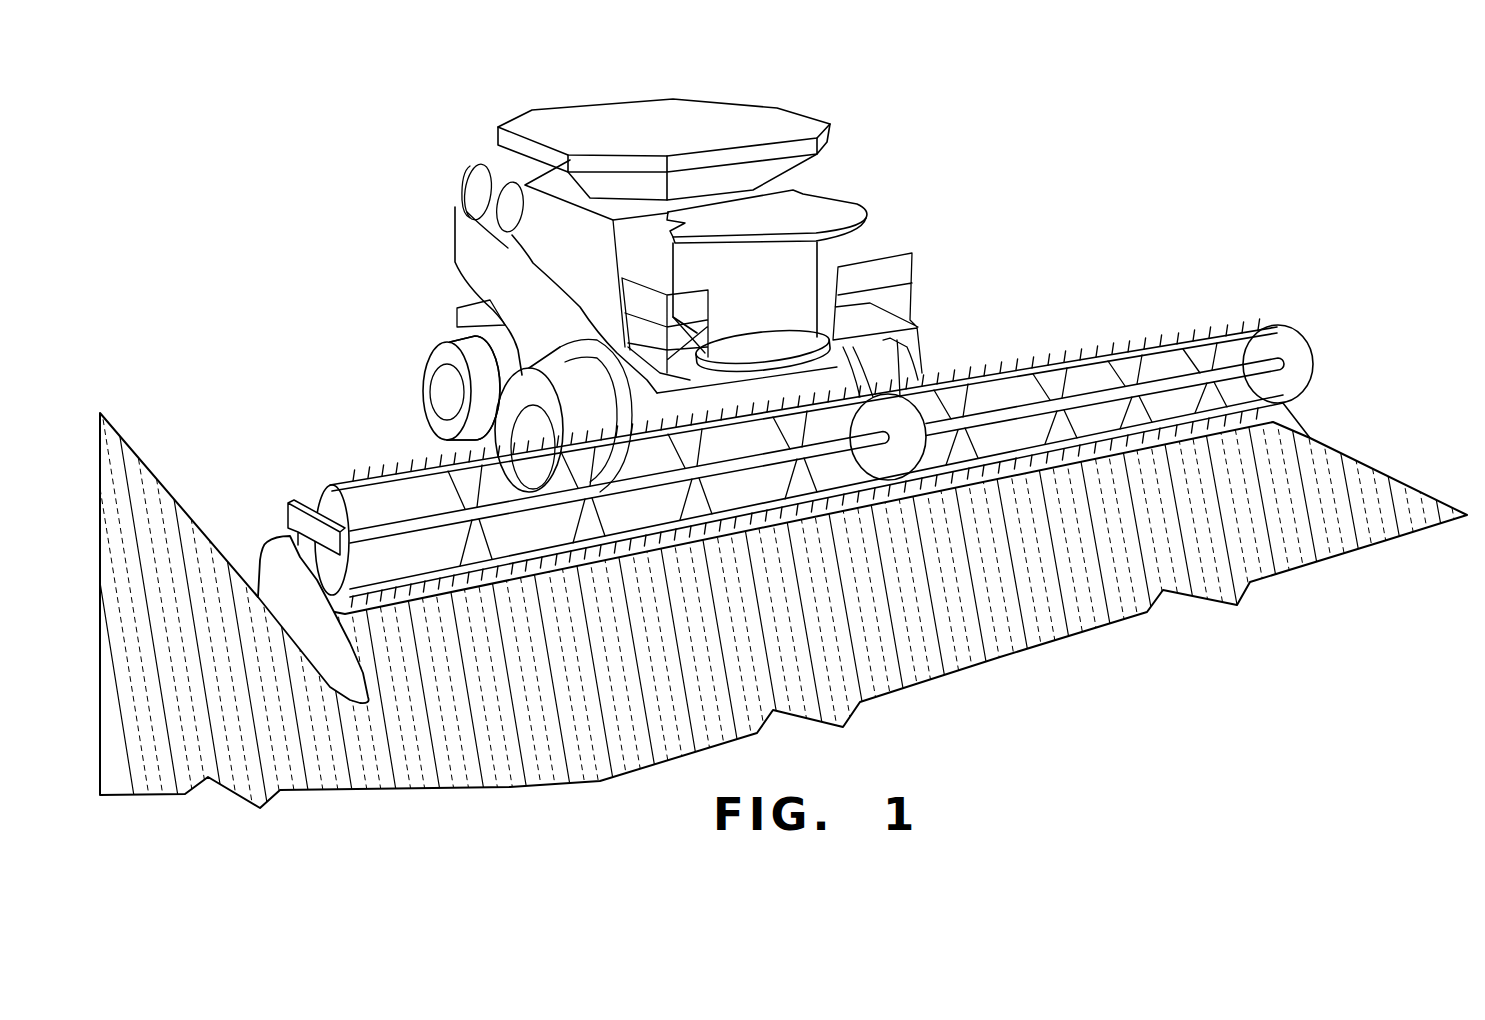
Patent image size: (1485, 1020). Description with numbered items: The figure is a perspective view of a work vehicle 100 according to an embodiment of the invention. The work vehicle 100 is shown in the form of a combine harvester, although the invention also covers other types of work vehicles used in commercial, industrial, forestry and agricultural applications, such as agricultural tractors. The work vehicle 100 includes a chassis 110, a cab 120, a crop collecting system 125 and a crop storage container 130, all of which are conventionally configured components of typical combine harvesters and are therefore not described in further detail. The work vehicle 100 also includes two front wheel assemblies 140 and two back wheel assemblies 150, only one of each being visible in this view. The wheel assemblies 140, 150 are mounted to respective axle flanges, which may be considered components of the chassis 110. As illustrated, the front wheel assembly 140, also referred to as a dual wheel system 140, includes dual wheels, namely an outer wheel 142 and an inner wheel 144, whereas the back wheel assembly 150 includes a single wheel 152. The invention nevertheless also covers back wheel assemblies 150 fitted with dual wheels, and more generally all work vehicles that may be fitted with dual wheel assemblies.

The work vehicle 100 is at (1140, 660).
The chassis 110 is at (523, 293).
The cab 120 is at (828, 218).
The crop collecting system 125 is at (1312, 330).
The crop storage container 130 is at (713, 113).
The front wheel assembly 140 is at (455, 449).
The outer wheel 142 is at (587, 413).
The inner wheel 144 is at (627, 400).
The back wheel assembly 150 is at (412, 382).
The single wheel 152 is at (430, 363).